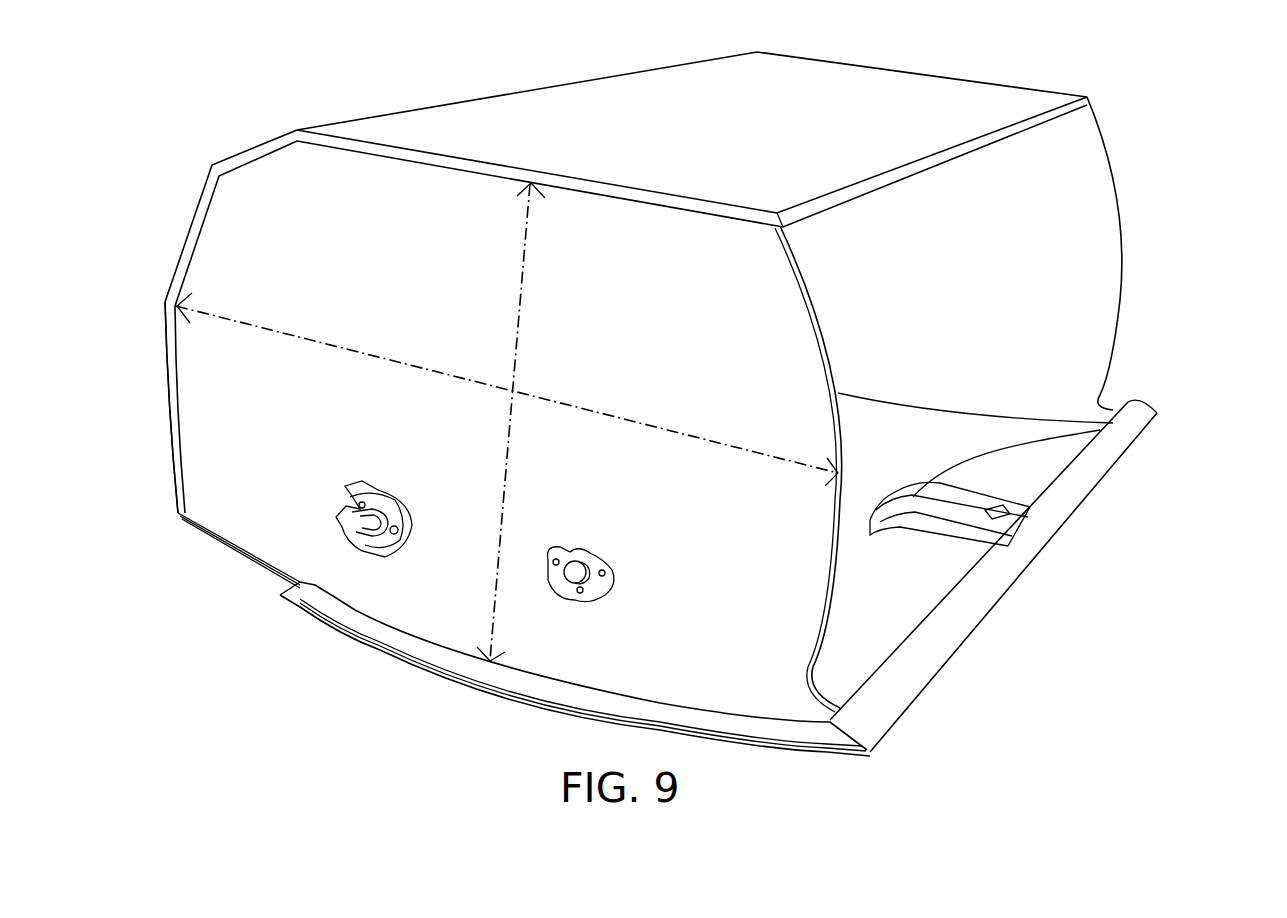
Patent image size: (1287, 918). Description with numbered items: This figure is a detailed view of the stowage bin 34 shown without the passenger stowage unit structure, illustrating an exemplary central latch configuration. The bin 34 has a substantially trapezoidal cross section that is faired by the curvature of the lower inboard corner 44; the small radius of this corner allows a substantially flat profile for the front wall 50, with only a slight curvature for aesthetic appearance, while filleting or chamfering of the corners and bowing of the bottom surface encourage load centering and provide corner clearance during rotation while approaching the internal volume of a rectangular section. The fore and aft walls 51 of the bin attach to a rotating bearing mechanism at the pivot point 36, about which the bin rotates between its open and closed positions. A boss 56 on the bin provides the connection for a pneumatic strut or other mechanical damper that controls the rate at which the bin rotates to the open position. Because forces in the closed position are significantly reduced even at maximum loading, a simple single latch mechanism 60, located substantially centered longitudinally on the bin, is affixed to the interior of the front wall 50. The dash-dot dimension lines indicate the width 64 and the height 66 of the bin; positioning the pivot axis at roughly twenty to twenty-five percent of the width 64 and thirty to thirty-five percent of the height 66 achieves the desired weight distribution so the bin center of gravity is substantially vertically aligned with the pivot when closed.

The bin 34 is at (1113, 470).
The pivot point 36 is at (377, 510).
The lower inboard corner 44 is at (180, 513).
The front wall 50 is at (873, 637).
The fore and aft walls 51 is at (695, 375).
The boss 56 is at (590, 553).
The single latch mechanism 60 is at (1142, 396).
The width of the bin 64 is at (523, 270).
The height of the bin 66 is at (362, 352).